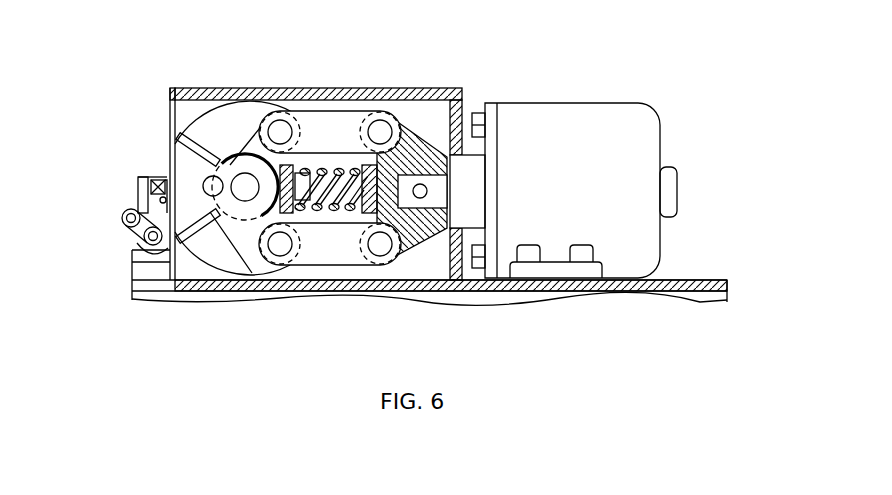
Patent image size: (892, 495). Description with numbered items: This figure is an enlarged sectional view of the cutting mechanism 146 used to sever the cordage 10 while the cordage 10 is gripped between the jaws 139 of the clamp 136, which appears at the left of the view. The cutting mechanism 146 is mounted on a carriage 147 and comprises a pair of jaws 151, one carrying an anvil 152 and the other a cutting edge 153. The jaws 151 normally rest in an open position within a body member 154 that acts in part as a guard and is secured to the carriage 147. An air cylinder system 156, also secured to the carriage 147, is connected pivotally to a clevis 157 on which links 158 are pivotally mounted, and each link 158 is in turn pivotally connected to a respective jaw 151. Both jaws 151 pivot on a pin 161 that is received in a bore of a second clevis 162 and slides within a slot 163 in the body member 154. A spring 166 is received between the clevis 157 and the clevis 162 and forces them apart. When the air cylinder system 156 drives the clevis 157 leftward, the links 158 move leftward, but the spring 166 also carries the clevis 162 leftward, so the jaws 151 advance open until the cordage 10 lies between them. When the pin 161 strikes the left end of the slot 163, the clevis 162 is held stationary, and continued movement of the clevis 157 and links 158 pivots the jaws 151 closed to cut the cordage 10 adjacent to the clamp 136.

The cordage 10 is at (150, 178).
The clamp 136 is at (116, 238).
The jaws 139 is at (162, 178).
The cutting mechanism 146 is at (511, 49).
The carriage 147 is at (689, 288).
The jaws 151 is at (218, 118).
The anvil 152 is at (204, 222).
The cutting edge 153 is at (183, 135).
The body member 154 is at (345, 90).
The air cylinder system 156 is at (567, 117).
The clevis 157 is at (434, 146).
The links 158 is at (363, 118).
The pin 161 is at (244, 200).
The clevis 162 is at (281, 213).
The slot 163 is at (232, 170).
The spring 166 is at (337, 214).